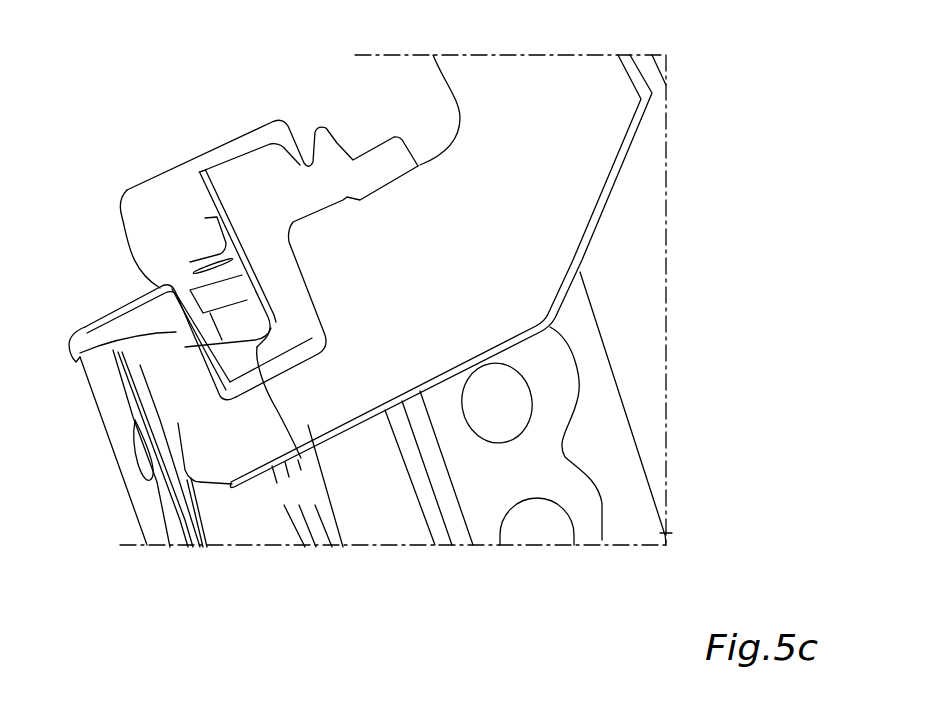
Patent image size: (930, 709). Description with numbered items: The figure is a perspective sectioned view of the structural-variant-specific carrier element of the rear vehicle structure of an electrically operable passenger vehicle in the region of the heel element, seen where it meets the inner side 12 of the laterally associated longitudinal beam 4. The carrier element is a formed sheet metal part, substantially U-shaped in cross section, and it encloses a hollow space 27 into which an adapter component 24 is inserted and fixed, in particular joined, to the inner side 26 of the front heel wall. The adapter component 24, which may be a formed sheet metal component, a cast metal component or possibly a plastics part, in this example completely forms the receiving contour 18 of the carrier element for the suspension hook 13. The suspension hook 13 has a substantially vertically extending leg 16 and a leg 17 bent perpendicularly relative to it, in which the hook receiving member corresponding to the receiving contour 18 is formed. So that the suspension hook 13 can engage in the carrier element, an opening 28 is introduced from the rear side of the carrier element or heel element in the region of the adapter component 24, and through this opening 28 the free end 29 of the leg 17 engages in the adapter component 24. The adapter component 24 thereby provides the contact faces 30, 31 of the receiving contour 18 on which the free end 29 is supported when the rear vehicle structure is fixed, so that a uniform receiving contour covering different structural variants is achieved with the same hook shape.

The longitudinal beam 4 is at (557, 475).
The inner side 12 is at (387, 510).
The suspension hook 13 is at (675, 123).
The leg 16 is at (572, 197).
The leg 17 is at (238, 468).
The receiving contour 18 is at (203, 370).
The adapter component 24 is at (270, 330).
The inner side 26 is at (185, 270).
The hollow space 27 is at (296, 460).
The opening 28 is at (143, 482).
The free end 29 is at (160, 385).
The contact face 30 is at (120, 300).
The contact face 31 is at (110, 363).